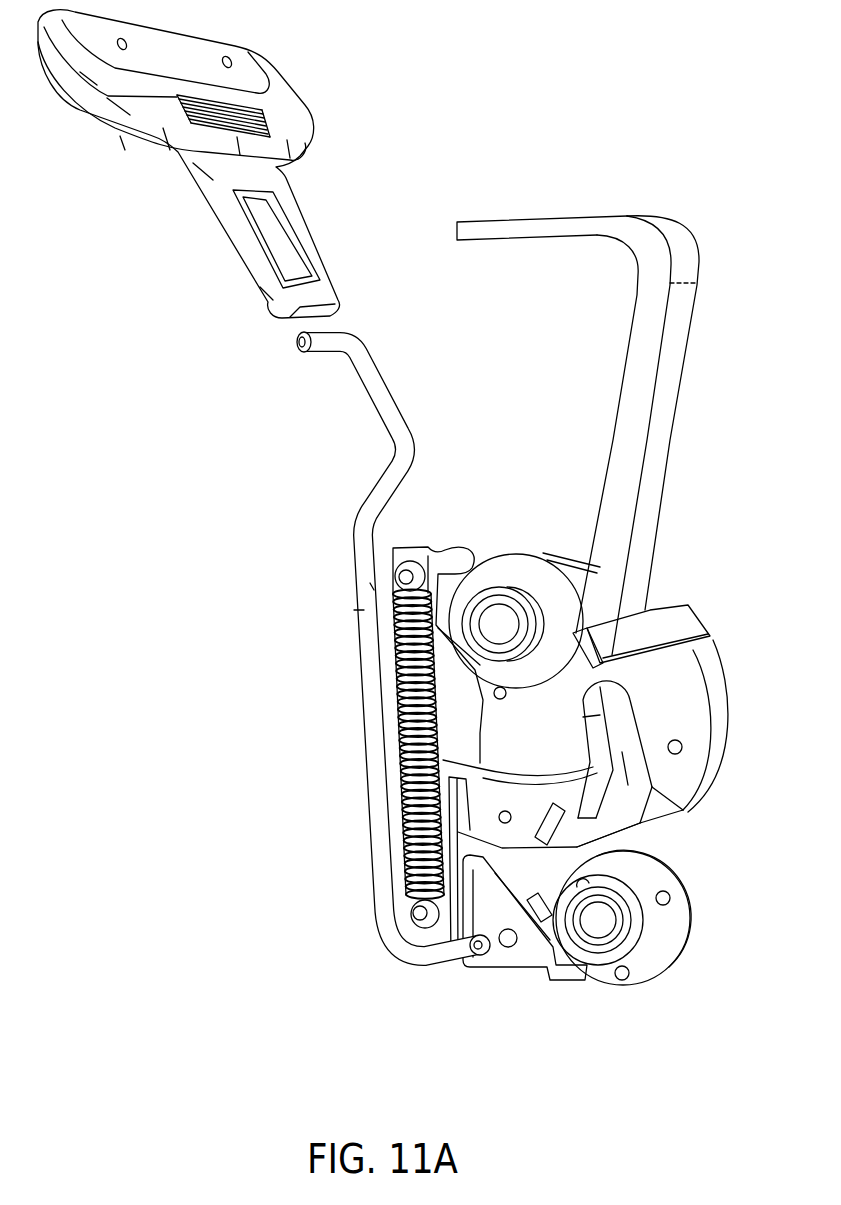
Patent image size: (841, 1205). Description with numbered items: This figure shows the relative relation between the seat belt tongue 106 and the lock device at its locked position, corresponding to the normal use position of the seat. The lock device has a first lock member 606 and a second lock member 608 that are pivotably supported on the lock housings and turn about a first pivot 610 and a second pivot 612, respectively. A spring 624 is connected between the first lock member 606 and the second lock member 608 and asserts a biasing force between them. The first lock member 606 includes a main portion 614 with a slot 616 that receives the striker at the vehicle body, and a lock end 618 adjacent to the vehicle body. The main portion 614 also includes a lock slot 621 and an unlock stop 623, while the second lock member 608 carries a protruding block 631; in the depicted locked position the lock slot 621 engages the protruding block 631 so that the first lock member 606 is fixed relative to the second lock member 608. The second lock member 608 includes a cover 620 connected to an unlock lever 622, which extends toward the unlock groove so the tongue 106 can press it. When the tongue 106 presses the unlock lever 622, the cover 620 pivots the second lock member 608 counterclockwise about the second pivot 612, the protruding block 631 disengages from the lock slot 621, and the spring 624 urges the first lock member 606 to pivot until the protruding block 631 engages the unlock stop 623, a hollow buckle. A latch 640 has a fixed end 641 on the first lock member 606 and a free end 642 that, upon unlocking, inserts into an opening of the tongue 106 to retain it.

The tongue 106 is at (283, 91).
The first lock member 606 is at (722, 669).
The second lock member 608 is at (668, 962).
The first pivot 610 is at (500, 615).
The second pivot 612 is at (600, 937).
The main portion 614 is at (516, 756).
The slot 616 is at (615, 749).
The lock end 618 is at (660, 726).
The cover 620 is at (470, 975).
The lock slot 621 is at (553, 810).
The unlock lever 622 is at (387, 403).
The unlock stop 623 is at (461, 775).
The spring 624 is at (395, 738).
The protruding block 631 is at (590, 840).
The latch 640 is at (660, 415).
The fixed end 641 is at (687, 620).
The free end 642 is at (522, 222).